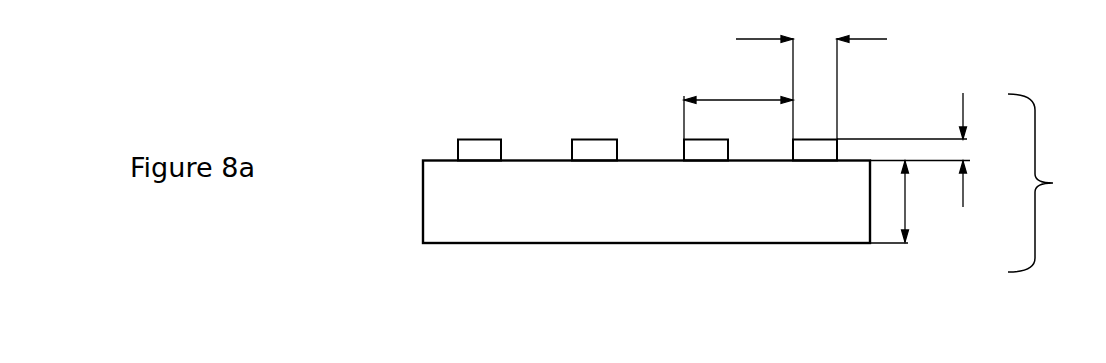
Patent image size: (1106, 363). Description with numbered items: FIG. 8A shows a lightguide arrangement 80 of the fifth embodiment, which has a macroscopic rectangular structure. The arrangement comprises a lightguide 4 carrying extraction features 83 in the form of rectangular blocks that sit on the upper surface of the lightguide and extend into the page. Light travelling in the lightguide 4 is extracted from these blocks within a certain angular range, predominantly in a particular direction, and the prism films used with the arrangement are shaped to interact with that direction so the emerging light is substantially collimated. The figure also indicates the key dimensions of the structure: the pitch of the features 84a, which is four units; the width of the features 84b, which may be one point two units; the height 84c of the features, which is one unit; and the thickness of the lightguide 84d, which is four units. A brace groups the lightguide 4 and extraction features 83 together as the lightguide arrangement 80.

The lightguide 4 is at (624, 194).
The extraction features 83 is at (467, 140).
The pitch of the features 84a is at (738, 88).
The width of the features 84b is at (811, 75).
The height 84c is at (903, 150).
The thickness of the lightguide 84d is at (913, 213).
The lightguide arrangement 80 is at (1053, 183).